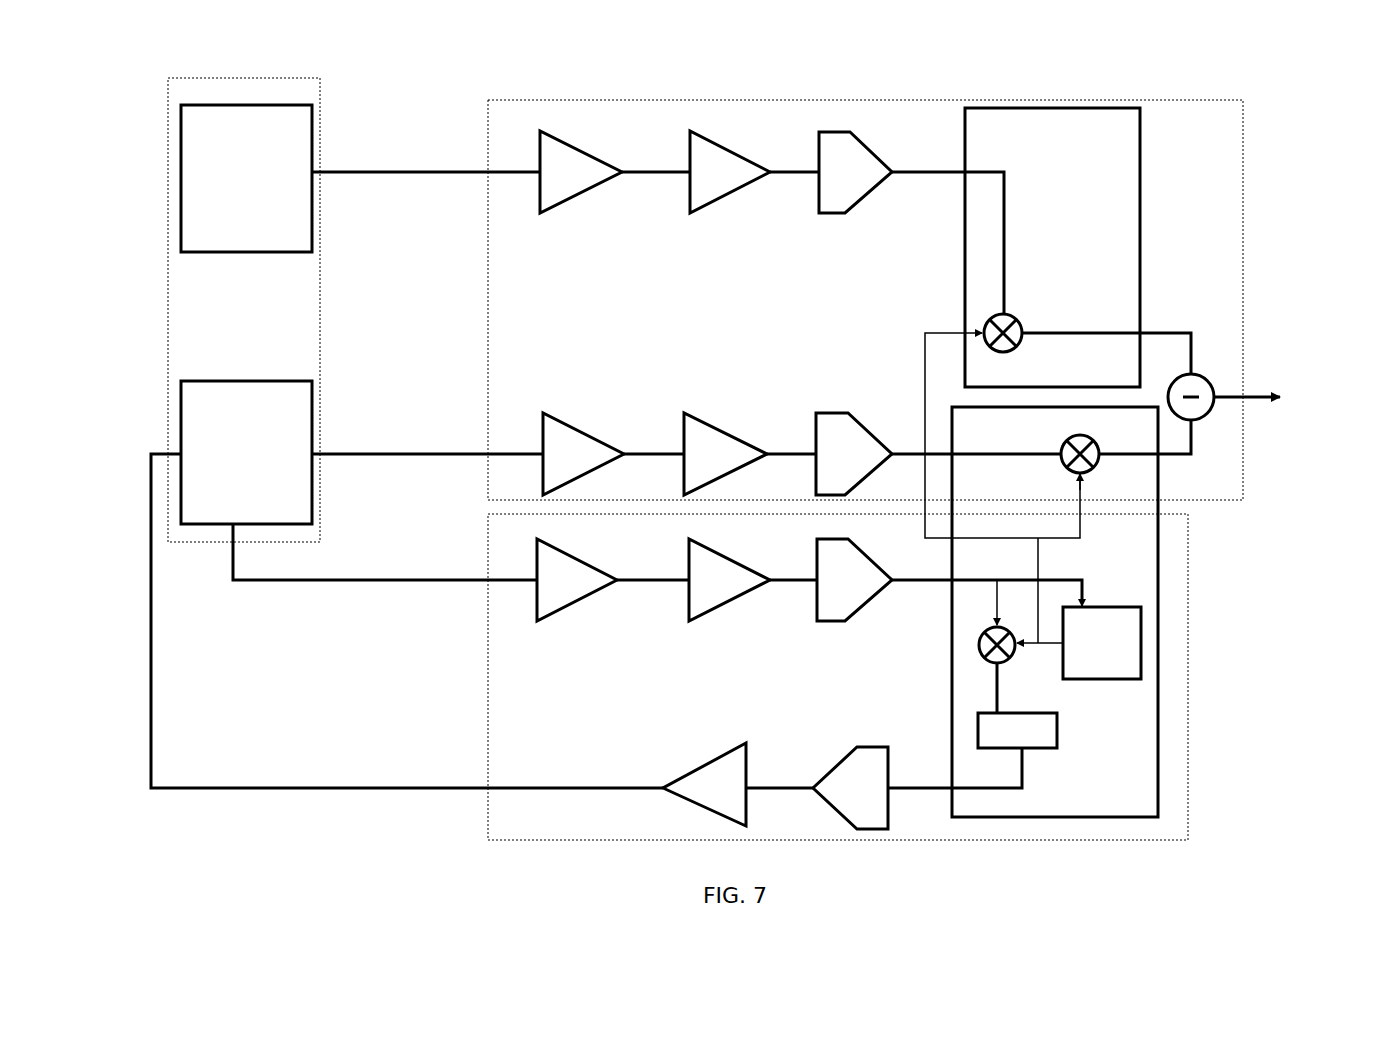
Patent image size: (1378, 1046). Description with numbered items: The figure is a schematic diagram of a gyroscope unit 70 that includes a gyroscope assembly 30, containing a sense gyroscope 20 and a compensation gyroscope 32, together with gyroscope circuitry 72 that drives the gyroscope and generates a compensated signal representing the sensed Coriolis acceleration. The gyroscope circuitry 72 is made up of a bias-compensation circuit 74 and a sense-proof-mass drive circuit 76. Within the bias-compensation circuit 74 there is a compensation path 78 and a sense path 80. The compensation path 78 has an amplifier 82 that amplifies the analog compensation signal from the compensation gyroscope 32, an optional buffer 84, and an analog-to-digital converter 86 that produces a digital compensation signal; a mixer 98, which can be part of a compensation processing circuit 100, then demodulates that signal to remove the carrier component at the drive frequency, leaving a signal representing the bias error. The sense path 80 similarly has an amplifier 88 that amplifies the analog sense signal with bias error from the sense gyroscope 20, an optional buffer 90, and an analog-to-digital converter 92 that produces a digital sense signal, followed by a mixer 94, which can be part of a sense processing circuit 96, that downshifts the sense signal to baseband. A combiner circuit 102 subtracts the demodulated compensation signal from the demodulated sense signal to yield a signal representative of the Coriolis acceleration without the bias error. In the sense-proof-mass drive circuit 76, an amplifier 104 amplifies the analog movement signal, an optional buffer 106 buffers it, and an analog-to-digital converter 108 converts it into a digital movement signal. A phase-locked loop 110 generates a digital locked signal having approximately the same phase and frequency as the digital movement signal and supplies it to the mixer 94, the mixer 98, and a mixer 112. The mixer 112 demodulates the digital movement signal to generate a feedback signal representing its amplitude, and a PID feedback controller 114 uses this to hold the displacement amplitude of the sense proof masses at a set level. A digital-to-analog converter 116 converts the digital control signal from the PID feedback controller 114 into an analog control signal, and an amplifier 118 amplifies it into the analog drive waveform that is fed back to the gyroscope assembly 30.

The sense gyroscope 20 is at (246, 452).
The gyroscope assembly 30 is at (320, 78).
The compensation gyroscope 32 is at (246, 178).
The gyroscope unit 70 is at (1232, 847).
The gyroscope circuitry 72 is at (430, 830).
The bias-compensation circuit 74 is at (1208, 100).
The sense-proof-mass drive circuit 76 is at (1188, 625).
The compensation path 78 is at (608, 230).
The sense path 80 is at (598, 362).
The amplifier 82 is at (541, 190).
The buffer 84 is at (697, 213).
The analog-to-digital converter 86 is at (846, 216).
The amplifier 88 is at (543, 420).
The buffer 90 is at (697, 418).
The analog-to-digital converter 92 is at (819, 410).
The mixer 94 is at (1062, 462).
The sense processing circuit 96 is at (1023, 612).
The mixer 98 is at (1013, 318).
The compensation processing circuit 100 is at (1052, 247).
The combiner circuit 102 is at (1200, 414).
The amplifier 104 is at (545, 618).
The buffer 106 is at (690, 618).
The analog-to-digital converter 108 is at (821, 622).
The phase-locked loop 110 is at (1108, 605).
The mixer 112 is at (988, 658).
The PID feedback controller 114 is at (1057, 733).
The digital-to-analog converter 116 is at (838, 763).
The amplifier 118 is at (710, 762).